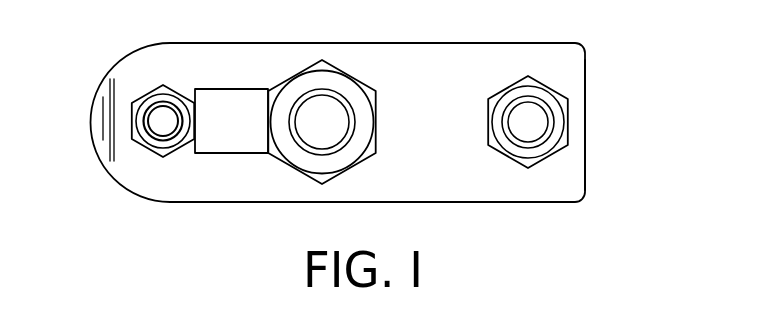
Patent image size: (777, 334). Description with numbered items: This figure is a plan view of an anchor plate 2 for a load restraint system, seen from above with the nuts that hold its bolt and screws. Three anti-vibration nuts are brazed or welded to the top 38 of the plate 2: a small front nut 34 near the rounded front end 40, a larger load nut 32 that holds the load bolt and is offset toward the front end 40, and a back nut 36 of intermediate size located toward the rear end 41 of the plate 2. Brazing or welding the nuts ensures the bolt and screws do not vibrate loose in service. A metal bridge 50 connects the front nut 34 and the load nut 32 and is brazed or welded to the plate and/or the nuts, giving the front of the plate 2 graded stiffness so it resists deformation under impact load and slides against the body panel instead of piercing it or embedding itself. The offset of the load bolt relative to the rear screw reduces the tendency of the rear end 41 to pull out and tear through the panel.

The anchor plate 2 is at (586, 54).
The load nut 32 is at (376, 91).
The front nut 34 is at (178, 88).
The back nut 36 is at (569, 108).
The top of the plate 38 is at (405, 176).
The front end 40 is at (94, 100).
The rear end 41 is at (586, 160).
The metal bridge 50 is at (230, 100).